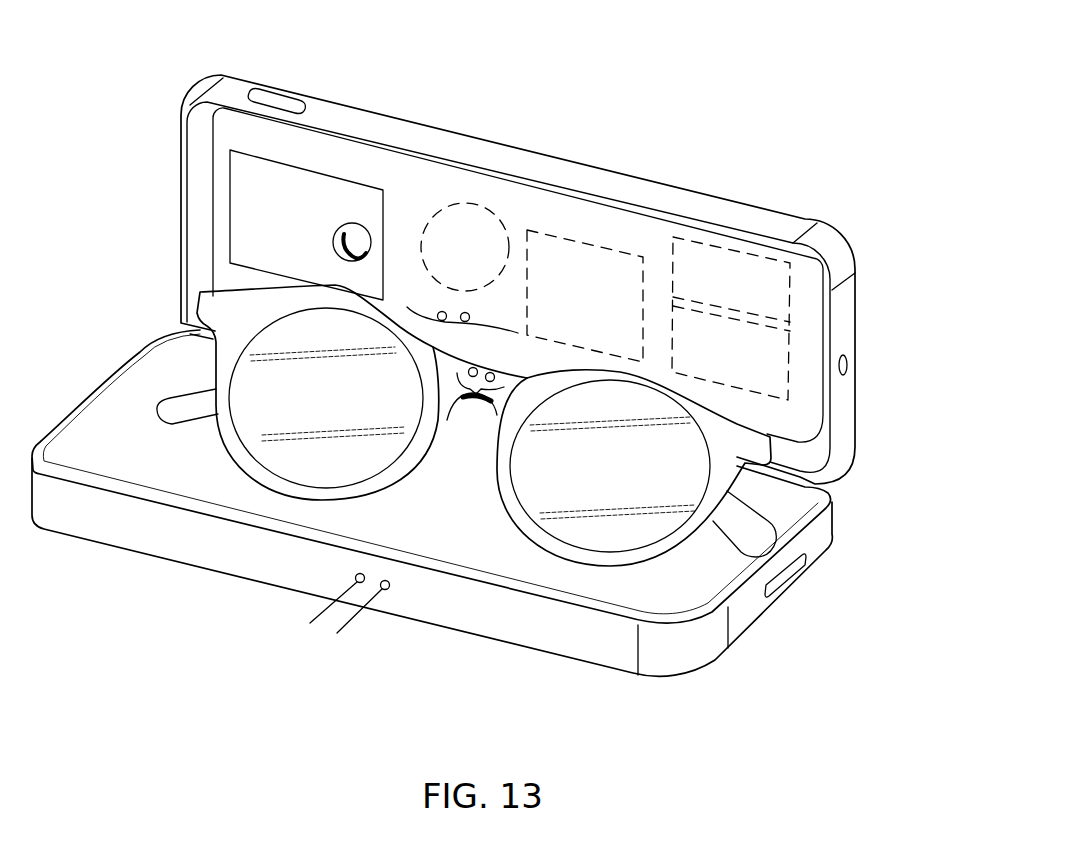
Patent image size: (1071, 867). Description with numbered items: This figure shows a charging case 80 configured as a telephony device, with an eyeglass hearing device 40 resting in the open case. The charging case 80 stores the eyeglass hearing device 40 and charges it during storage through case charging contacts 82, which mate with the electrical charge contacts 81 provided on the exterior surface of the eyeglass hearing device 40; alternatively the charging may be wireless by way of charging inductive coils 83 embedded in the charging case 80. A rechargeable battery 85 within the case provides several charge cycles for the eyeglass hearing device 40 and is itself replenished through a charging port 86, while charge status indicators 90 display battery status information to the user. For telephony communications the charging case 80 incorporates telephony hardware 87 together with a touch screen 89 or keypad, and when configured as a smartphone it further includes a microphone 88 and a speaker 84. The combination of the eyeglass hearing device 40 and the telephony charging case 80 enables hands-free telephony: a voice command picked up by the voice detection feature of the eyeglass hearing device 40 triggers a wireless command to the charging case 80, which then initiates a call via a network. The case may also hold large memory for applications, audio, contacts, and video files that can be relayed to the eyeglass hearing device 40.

The eyeglass hearing device 40 is at (497, 492).
The charging case 80 is at (222, 570).
The electrical charge contacts 81 is at (472, 400).
The case charging contacts 82 is at (442, 311).
The charging inductive coils 83 is at (486, 208).
The speaker 84 is at (280, 92).
The rechargeable battery 85 is at (745, 325).
The charging port 86 is at (793, 573).
The telephony hardware 87 is at (586, 276).
The microphone 88 is at (849, 366).
The touch screen or keypad 89 is at (236, 203).
The charge status indicators 90 is at (295, 626).